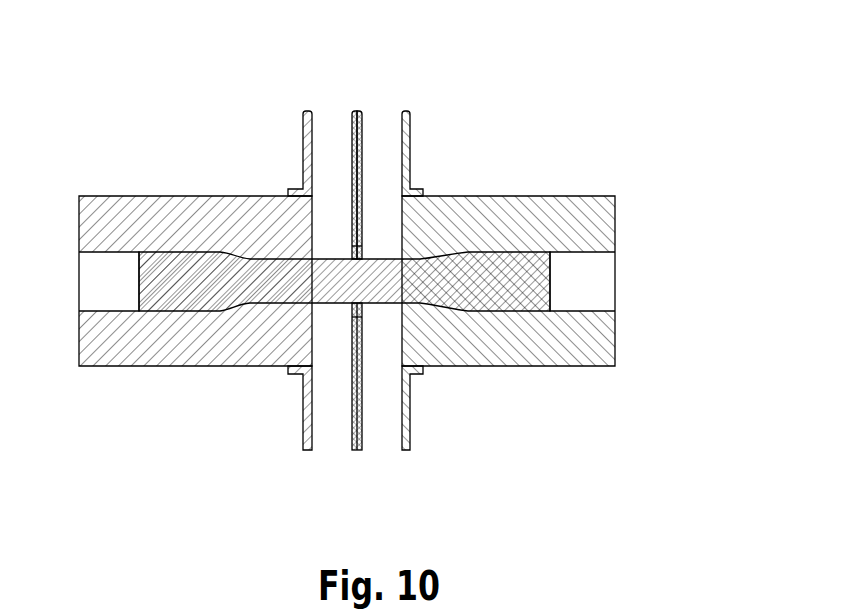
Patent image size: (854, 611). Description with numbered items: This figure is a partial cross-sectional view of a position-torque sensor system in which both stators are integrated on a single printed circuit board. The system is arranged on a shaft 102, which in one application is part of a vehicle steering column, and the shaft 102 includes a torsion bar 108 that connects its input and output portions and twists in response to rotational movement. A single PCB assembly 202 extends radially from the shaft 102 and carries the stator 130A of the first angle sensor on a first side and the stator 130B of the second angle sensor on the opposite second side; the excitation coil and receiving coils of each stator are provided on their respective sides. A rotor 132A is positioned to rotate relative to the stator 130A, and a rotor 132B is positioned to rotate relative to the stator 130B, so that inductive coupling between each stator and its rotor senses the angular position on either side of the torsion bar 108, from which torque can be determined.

The shaft 102 is at (572, 373).
The torsion bar 108 is at (537, 253).
The stator 130A is at (363, 193).
The stator 130B is at (348, 193).
The rotor 132A is at (528, 109).
The rotor 132B is at (303, 132).
The PCB assembly 202 is at (351, 451).